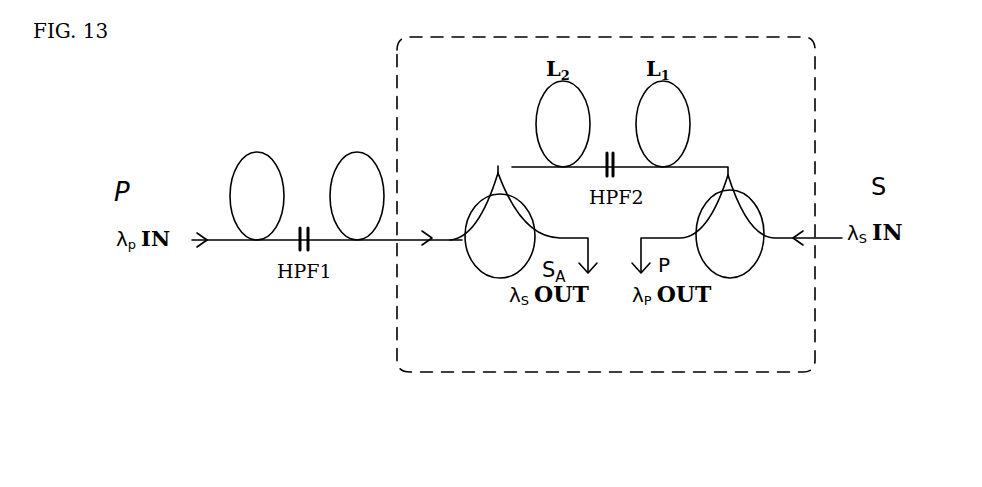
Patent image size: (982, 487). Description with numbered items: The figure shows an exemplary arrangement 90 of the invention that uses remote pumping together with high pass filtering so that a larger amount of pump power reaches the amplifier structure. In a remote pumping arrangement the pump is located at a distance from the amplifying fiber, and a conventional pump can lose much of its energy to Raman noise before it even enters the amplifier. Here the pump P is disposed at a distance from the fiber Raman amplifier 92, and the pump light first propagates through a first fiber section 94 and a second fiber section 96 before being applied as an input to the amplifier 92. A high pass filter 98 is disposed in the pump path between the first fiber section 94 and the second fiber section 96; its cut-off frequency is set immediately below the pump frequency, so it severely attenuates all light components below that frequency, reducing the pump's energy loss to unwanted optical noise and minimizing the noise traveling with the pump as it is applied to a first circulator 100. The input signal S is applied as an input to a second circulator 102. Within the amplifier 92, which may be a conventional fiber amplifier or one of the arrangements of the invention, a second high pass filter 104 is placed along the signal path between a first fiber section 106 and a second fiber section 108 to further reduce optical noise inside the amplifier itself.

The arrangement 90 is at (212, 92).
The fiber Raman amplifier 92 is at (619, 378).
The first fiber section 94 is at (258, 149).
The second fiber section 96 is at (357, 150).
The high pass filter 98 is at (302, 218).
The first circulator 100 is at (476, 213).
The second circulator 102 is at (753, 211).
The second high pass filter 104 is at (608, 142).
The first fiber section 106 is at (685, 112).
The second fiber section 108 is at (540, 113).